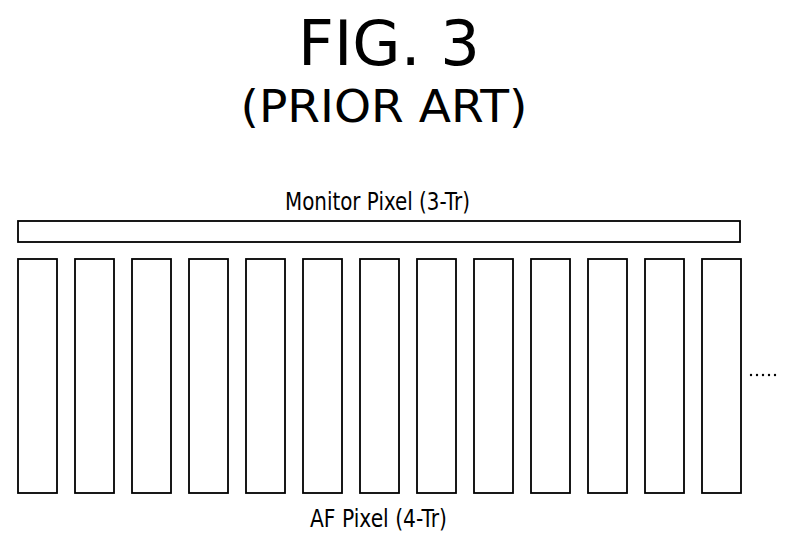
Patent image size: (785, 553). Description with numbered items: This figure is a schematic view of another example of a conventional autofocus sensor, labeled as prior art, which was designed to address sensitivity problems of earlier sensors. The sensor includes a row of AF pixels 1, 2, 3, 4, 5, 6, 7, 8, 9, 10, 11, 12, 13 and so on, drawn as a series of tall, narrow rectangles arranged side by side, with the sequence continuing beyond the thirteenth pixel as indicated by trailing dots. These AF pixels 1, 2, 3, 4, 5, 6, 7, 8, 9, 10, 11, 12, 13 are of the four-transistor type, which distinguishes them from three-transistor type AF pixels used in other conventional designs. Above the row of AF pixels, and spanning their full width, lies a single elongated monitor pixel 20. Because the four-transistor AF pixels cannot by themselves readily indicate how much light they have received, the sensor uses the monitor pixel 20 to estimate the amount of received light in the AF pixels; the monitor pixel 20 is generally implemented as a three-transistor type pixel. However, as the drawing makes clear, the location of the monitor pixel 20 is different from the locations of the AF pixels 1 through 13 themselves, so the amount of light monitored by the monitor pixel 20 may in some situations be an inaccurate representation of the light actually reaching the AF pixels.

The monitor pixel 20 is at (633, 221).
The AF pixel 1 is at (37, 376).
The AF pixel 2 is at (94, 376).
The AF pixel 3 is at (151, 376).
The AF pixel 4 is at (208, 376).
The AF pixel 5 is at (265, 376).
The AF pixel 6 is at (322, 376).
The AF pixel 7 is at (379, 376).
The AF pixel 8 is at (436, 376).
The AF pixel 9 is at (493, 376).
The AF pixel 10 is at (550, 376).
The AF pixel 11 is at (607, 376).
The AF pixel 12 is at (664, 376).
The AF pixel 13 is at (721, 376).